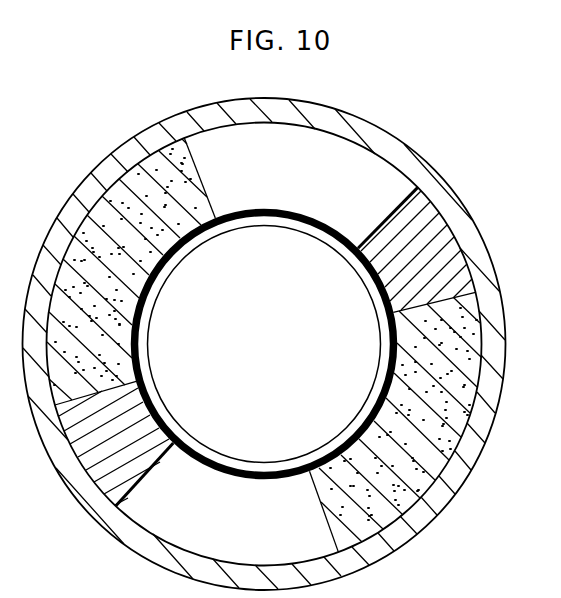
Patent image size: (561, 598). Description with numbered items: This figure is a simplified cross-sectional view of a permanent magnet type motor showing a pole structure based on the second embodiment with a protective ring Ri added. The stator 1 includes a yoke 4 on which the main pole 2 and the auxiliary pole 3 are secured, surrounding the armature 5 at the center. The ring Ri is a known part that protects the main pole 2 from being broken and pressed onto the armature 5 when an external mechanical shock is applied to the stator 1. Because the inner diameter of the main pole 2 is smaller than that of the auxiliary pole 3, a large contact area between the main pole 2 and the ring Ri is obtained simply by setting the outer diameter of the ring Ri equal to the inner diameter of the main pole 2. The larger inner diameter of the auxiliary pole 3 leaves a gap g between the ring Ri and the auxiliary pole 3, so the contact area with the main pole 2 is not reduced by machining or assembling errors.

The stator 1 is at (92, 180).
The main pole 2 is at (448, 445).
The auxiliary pole 3 is at (447, 228).
The yoke 4 is at (377, 138).
The armature 5 is at (237, 477).
The ring Ri is at (287, 212).
The gap g is at (359, 248).